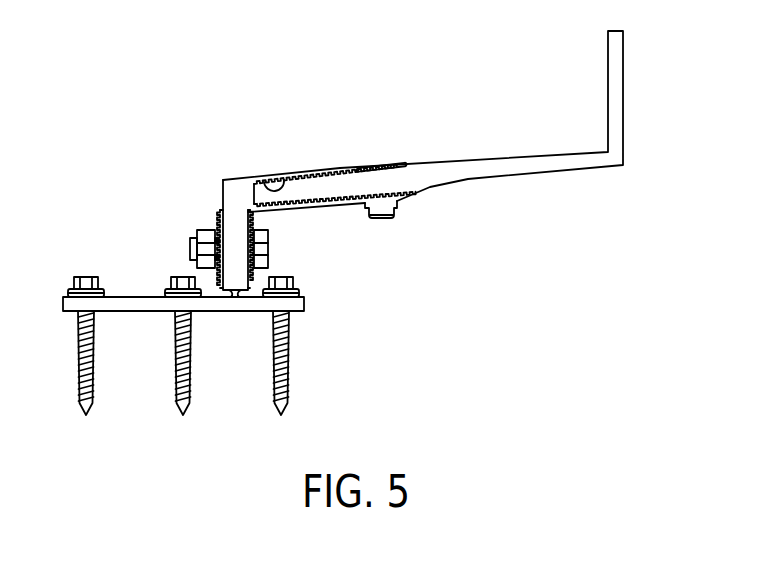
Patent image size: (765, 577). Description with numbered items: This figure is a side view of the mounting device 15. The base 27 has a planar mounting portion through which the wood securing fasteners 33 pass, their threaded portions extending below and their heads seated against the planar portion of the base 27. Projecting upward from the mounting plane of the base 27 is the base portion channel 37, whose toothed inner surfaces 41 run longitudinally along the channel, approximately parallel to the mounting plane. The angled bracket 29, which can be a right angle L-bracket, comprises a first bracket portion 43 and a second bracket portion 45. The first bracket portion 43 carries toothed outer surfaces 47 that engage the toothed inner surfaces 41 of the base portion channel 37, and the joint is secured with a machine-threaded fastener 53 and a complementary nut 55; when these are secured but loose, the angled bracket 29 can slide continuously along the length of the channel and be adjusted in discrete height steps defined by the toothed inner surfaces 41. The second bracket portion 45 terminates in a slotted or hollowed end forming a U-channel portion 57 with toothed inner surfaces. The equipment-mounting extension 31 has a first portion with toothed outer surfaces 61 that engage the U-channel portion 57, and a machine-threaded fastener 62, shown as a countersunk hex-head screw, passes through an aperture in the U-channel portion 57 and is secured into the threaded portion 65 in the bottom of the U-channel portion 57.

The mounting assembly 15 is at (340, 72).
The base 27 is at (124, 294).
The angled bracket 29 is at (323, 165).
The equipment-mounting extension 31 is at (466, 158).
The wood securing fasteners 33 is at (90, 277).
The base portion channel 37 is at (216, 220).
The toothed inner surfaces 41 is at (222, 311).
The first bracket portion 43 is at (222, 192).
The second bracket portion 45 is at (233, 178).
The toothed outer surfaces 47 is at (247, 311).
The machine-threaded fastener 53 is at (268, 245).
The nut 55 is at (197, 238).
The U-channel portion 57 is at (294, 209).
The toothed outer surfaces 61 is at (279, 181).
The machine-threaded fastener 62 is at (380, 163).
The threaded portion 65 is at (400, 204).